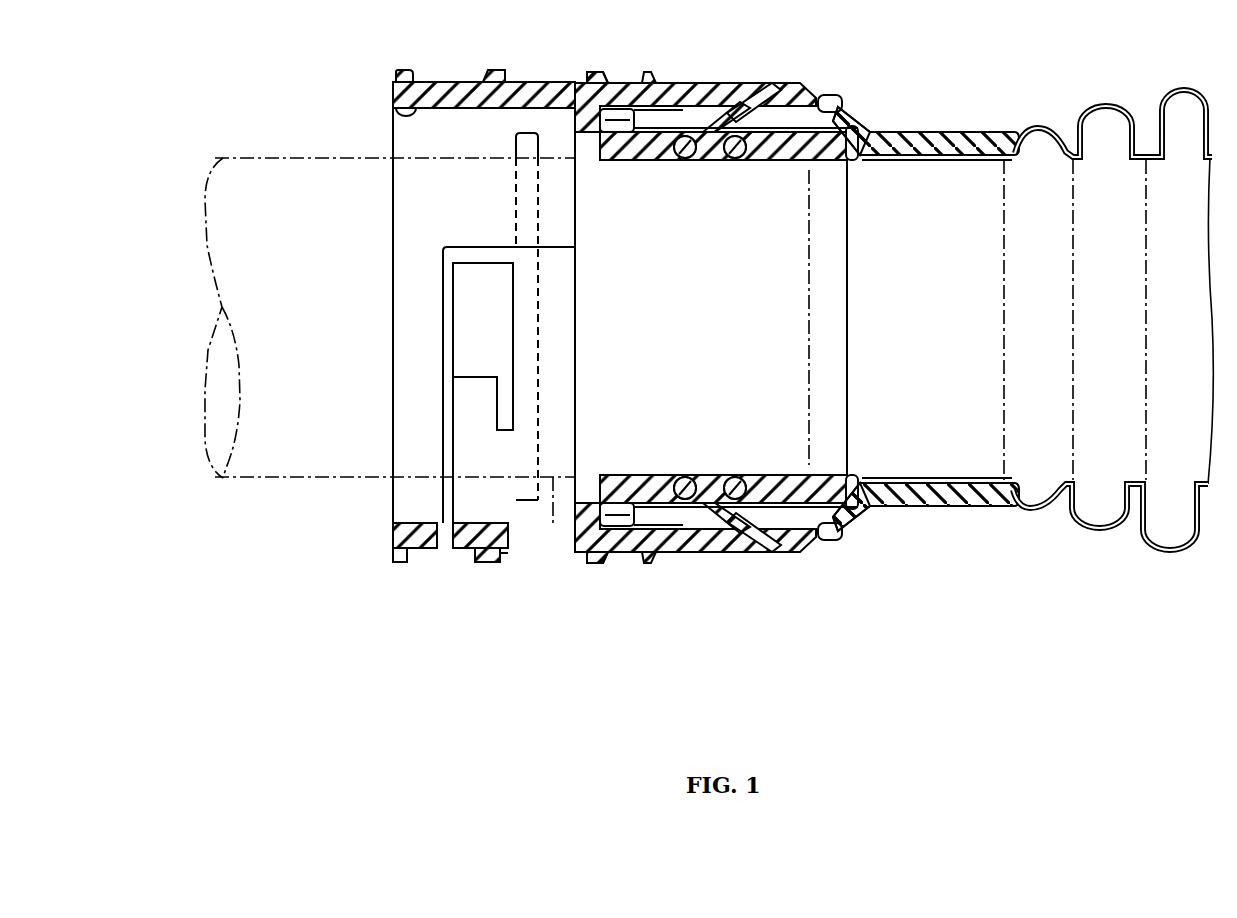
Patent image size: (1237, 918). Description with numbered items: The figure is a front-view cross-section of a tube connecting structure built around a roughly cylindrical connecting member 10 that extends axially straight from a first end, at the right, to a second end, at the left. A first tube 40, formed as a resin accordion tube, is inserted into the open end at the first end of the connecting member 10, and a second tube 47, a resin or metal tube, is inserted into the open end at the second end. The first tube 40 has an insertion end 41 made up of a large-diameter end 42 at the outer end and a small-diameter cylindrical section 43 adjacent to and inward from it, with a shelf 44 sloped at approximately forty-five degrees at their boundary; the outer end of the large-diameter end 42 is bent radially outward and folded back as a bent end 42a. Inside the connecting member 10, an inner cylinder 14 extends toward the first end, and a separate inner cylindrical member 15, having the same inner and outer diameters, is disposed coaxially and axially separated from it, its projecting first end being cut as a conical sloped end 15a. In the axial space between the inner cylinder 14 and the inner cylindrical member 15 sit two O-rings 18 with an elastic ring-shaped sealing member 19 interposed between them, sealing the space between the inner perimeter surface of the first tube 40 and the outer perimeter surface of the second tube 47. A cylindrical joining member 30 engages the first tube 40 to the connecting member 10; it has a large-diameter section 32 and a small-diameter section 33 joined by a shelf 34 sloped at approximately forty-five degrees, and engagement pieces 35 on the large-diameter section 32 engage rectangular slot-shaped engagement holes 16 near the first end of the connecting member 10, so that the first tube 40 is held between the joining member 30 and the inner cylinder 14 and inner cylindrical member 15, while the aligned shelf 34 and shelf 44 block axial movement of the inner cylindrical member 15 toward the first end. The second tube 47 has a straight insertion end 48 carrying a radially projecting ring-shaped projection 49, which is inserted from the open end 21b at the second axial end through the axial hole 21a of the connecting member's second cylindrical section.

The connecting member 10 is at (622, 77).
The inner cylinder 14 is at (633, 160).
The inner cylindrical member 15 is at (820, 165).
The sloped end 15a is at (838, 122).
The engagement holes 16 is at (750, 84).
The O-rings 18 is at (688, 160).
The sealing member 19 is at (722, 160).
The axial hole 21a is at (397, 112).
The open end 21b is at (393, 525).
The joining member 30 is at (917, 129).
The large-diameter section 32 is at (823, 94).
The small-diameter section 33 is at (982, 130).
The shelf 34 is at (868, 127).
The engagement pieces 35 is at (728, 103).
The first tube 40 is at (1110, 102).
The insertion end 41 is at (925, 164).
The large-diameter end 42 is at (654, 120).
The bent end 42a is at (582, 78).
The small-diameter cylindrical section 43 is at (950, 163).
The shelf 44 is at (850, 172).
The second tube 47 is at (282, 155).
The insertion end 48 is at (553, 525).
The ring-shaped projection 49 is at (526, 502).